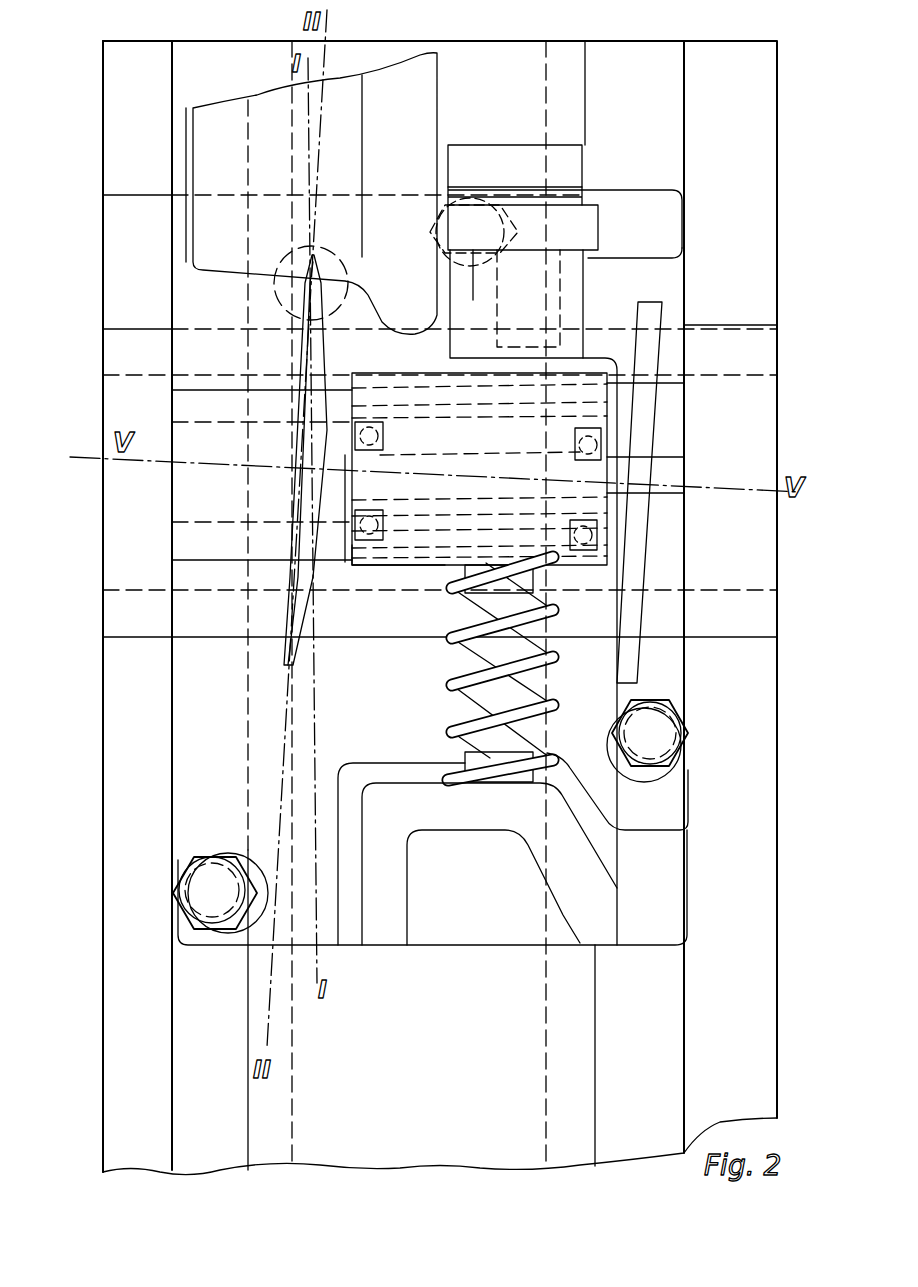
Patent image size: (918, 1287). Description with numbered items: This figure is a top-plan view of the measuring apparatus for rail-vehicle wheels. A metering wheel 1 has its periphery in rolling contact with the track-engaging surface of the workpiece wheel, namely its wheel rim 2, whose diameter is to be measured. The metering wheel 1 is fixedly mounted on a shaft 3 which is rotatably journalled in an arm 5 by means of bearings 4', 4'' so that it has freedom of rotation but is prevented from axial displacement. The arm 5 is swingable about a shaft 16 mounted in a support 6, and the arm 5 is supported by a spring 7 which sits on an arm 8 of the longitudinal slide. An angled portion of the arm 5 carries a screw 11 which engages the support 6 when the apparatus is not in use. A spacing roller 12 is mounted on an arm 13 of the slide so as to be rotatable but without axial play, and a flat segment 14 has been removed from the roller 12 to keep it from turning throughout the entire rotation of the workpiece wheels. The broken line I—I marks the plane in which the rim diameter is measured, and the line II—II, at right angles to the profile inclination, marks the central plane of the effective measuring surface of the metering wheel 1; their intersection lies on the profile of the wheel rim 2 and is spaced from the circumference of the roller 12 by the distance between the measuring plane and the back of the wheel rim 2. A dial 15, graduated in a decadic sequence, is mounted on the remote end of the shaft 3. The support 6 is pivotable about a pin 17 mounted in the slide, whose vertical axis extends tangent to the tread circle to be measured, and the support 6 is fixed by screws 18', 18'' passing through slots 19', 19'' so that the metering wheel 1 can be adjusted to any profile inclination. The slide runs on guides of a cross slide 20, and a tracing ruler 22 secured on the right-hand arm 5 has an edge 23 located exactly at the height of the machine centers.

The metering wheel 1 is at (301, 413).
The wheel rim 2 is at (218, 240).
The shaft 3 is at (408, 480).
The bearing 4' is at (354, 526).
The bearing 4'' is at (650, 496).
The arm 5 is at (372, 553).
The support 6 is at (212, 758).
The spring 7 is at (445, 748).
The arm of the longitudinal slide 8 is at (385, 862).
The screw 11 is at (463, 195).
The spacing roller 12 is at (570, 240).
The arm of the slide 13 is at (665, 258).
The flat segment 14 is at (597, 220).
The dial 15 is at (643, 410).
The shaft 16 is at (270, 523).
The pin 17 is at (297, 298).
The screw 18' is at (189, 891).
The screw 18'' is at (685, 735).
The slot 19' is at (228, 931).
The slot 19'' is at (676, 769).
The cross slide 20 is at (152, 1043).
The tracing ruler 22 is at (572, 152).
The edge 23 is at (452, 168).